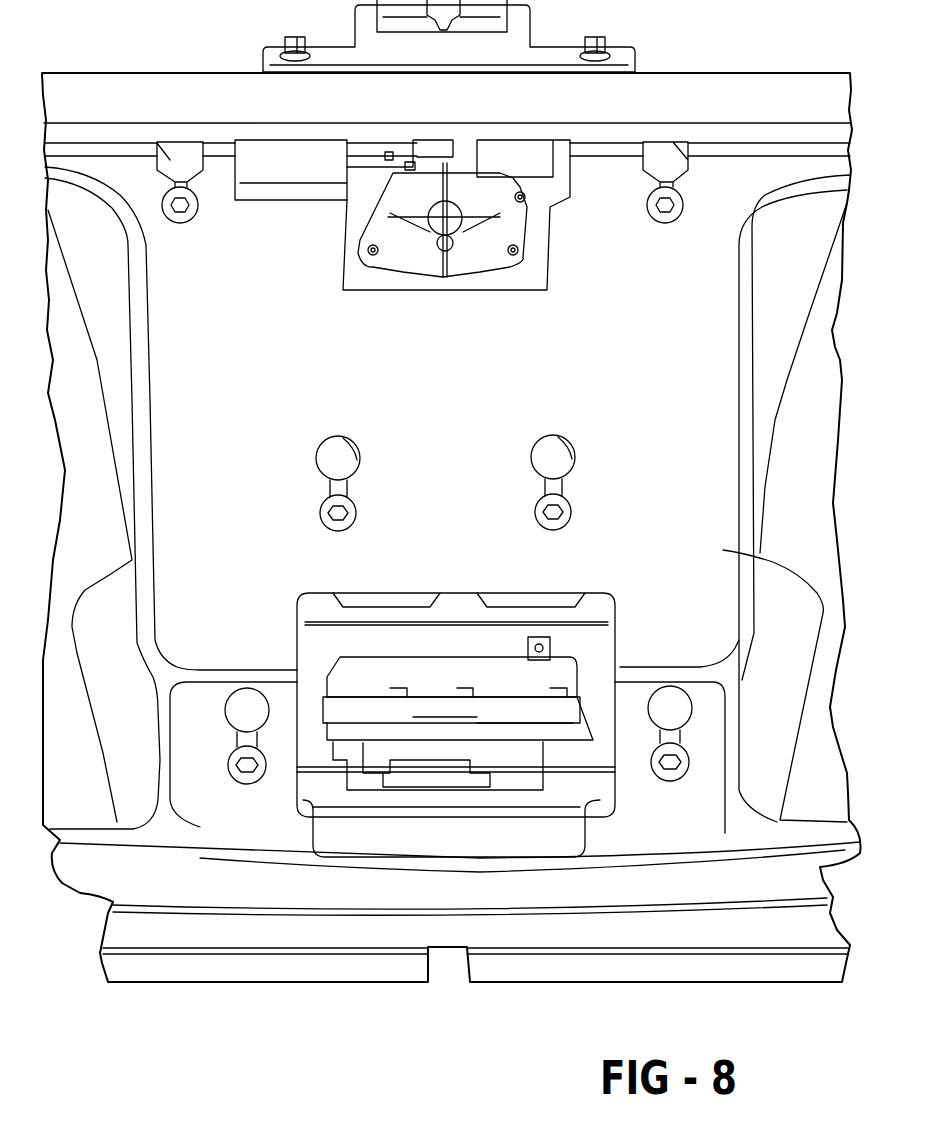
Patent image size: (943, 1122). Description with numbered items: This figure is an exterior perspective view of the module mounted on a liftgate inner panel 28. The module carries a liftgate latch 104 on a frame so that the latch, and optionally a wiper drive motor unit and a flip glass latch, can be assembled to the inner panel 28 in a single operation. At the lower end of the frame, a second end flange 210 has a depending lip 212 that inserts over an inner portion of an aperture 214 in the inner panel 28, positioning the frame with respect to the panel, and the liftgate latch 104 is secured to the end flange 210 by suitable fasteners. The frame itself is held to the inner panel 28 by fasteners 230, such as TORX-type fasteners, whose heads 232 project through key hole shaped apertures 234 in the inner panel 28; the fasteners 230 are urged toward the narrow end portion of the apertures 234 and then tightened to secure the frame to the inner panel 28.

The liftgate inner panel 28 is at (728, 92).
The liftgate latch 104 is at (493, 673).
The second end flange 210 is at (537, 800).
The depending lip 212 is at (367, 845).
The aperture 214 is at (310, 757).
The fasteners 230 is at (222, 778).
The heads 232 is at (670, 773).
The key hole shaped apertures 234 is at (692, 700).